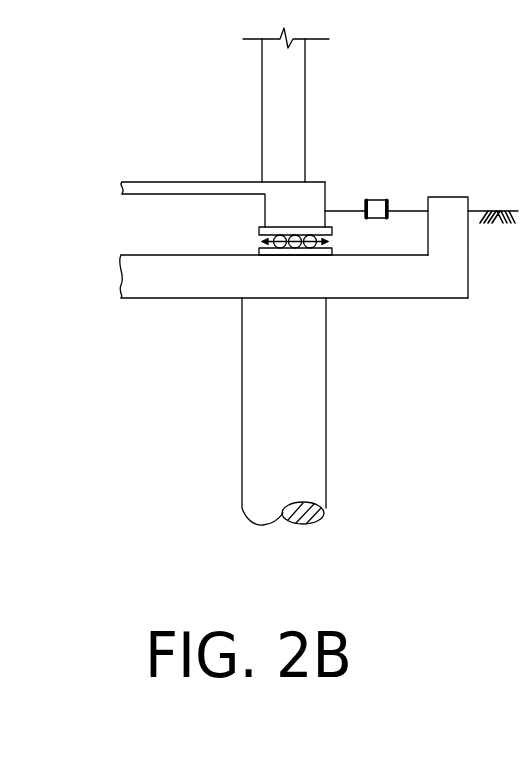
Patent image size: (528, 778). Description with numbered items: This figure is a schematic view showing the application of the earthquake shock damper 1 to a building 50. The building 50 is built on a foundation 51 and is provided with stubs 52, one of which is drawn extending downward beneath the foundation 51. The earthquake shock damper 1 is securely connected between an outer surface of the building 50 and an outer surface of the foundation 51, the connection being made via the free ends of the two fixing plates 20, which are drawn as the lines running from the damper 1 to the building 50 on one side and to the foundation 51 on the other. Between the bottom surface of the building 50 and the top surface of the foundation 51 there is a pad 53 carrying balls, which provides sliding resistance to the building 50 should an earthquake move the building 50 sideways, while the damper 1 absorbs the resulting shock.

The earthquake shock damper 1 is at (380, 194).
The fixing plates 20 is at (343, 211).
The building 50 is at (172, 186).
The foundation 51 is at (193, 283).
The stubs 52 is at (247, 412).
The pad 53 is at (330, 245).